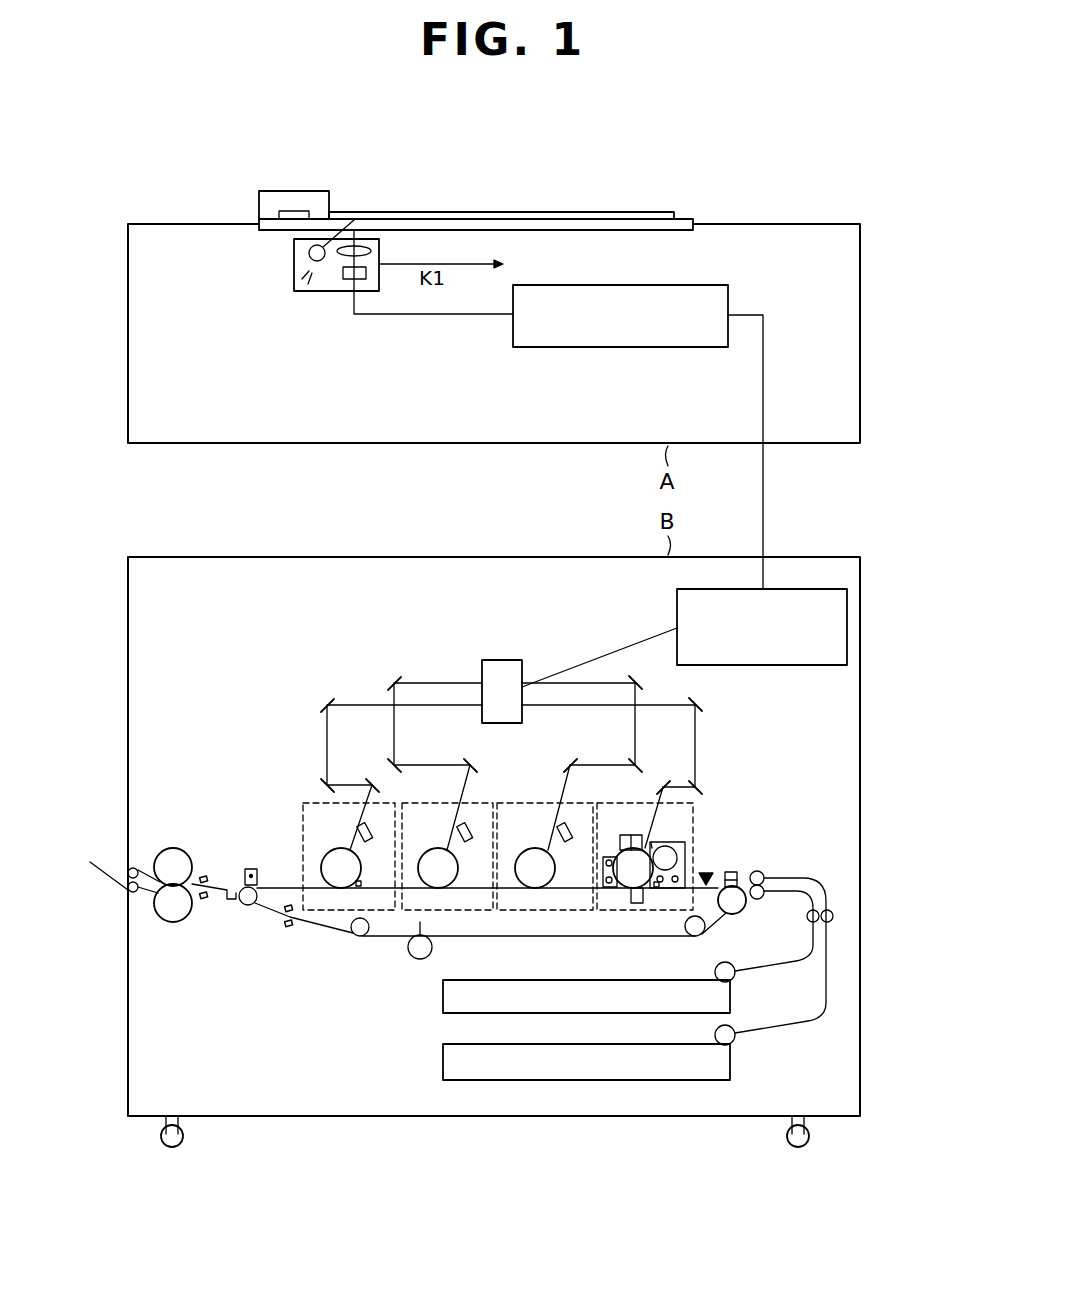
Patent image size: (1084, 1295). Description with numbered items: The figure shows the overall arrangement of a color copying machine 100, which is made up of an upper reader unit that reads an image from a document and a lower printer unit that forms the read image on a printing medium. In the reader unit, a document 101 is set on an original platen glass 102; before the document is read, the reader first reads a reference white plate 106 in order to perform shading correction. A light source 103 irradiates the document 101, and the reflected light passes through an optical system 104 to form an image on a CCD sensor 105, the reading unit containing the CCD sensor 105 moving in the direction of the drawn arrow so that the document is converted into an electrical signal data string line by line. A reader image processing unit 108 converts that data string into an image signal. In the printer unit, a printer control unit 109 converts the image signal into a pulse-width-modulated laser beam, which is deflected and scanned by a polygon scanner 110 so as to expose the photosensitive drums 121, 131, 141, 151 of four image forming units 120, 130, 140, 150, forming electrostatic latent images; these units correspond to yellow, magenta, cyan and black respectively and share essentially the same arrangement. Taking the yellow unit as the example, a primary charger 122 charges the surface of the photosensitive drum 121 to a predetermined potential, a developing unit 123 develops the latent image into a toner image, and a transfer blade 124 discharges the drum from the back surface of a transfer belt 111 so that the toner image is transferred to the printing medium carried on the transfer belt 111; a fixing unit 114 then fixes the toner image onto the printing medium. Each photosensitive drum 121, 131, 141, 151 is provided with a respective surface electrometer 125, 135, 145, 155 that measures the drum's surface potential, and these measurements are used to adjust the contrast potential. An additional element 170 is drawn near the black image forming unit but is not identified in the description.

The copying machine 100 is at (852, 141).
The document 101 is at (637, 212).
The original platen glass 102 is at (690, 218).
The light source 103 is at (309, 254).
The optical system 104 is at (350, 257).
The CCD sensor 105 is at (355, 280).
The reference white plate 106 is at (276, 213).
The reader image processing unit 108 is at (729, 297).
The printer control unit 109 is at (822, 667).
The polygon scanner 110 is at (503, 660).
The transfer belt 111 is at (343, 935).
The fixing unit 114 is at (173, 847).
The image forming unit 120 is at (623, 803).
The photosensitive drum 121 is at (631, 873).
The primary charger 122 is at (636, 835).
The developing unit 123 is at (684, 842).
The transfer blade 124 is at (637, 903).
The surface electrometer 125 is at (653, 843).
The image forming unit 130 is at (527, 803).
The photosensitive drum 131 is at (535, 873).
The surface electrometer 135 is at (568, 824).
The image forming unit 140 is at (428, 803).
The photosensitive drum 141 is at (434, 873).
The surface electrometer 145 is at (468, 828).
The image forming unit 150 is at (390, 803).
The photosensitive drum 151 is at (340, 873).
The surface electrometer 155 is at (360, 826).
The density sensor 170 is at (657, 888).